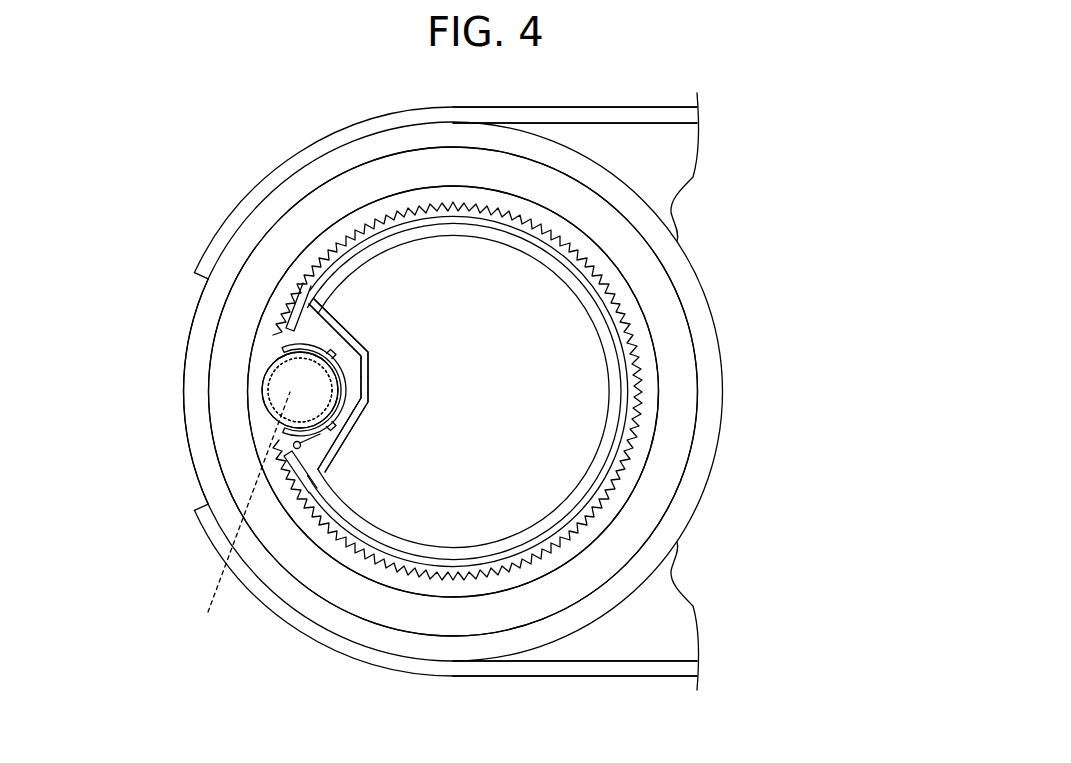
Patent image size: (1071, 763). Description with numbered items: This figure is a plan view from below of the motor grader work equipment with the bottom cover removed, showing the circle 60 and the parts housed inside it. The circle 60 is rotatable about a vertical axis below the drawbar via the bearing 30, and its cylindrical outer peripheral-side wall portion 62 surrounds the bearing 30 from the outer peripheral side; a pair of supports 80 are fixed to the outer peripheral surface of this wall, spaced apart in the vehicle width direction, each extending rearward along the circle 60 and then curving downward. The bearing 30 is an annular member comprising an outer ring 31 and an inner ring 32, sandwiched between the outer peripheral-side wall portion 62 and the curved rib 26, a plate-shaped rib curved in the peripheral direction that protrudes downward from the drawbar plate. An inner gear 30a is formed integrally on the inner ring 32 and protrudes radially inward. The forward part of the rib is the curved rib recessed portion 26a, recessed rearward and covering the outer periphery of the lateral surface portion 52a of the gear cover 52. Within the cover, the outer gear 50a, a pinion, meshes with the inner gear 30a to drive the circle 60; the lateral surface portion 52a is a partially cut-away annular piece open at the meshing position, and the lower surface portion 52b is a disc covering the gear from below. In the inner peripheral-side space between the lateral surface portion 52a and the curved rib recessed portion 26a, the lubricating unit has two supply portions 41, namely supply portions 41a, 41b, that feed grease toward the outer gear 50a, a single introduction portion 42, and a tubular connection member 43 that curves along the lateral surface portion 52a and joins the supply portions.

The curved rib 26 is at (617, 457).
The curved rib recessed portion 26a is at (313, 490).
The bearing 30 is at (792, 248).
The inner gear 30a is at (640, 384).
The outer ring 31 is at (672, 337).
The inner ring 32 is at (620, 290).
The supply portion 41 is at (338, 385).
The supply portion 41a is at (327, 432).
The supply portion 41b is at (333, 358).
The introduction portion 42 is at (302, 447).
The connection member 43 is at (341, 417).
The outer gear 50a is at (236, 517).
The gear cover 52 is at (84, 248).
The lateral surface portion 52a is at (293, 350).
The lower surface portion 52b is at (262, 387).
The circle 60 is at (170, 414).
The outer peripheral-side wall portion 62 is at (190, 455).
The support 80 is at (607, 117).